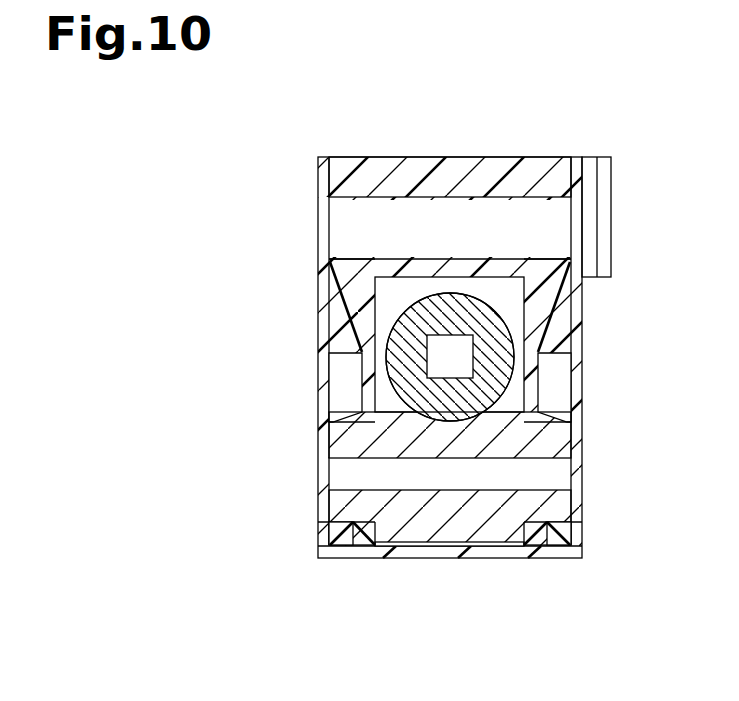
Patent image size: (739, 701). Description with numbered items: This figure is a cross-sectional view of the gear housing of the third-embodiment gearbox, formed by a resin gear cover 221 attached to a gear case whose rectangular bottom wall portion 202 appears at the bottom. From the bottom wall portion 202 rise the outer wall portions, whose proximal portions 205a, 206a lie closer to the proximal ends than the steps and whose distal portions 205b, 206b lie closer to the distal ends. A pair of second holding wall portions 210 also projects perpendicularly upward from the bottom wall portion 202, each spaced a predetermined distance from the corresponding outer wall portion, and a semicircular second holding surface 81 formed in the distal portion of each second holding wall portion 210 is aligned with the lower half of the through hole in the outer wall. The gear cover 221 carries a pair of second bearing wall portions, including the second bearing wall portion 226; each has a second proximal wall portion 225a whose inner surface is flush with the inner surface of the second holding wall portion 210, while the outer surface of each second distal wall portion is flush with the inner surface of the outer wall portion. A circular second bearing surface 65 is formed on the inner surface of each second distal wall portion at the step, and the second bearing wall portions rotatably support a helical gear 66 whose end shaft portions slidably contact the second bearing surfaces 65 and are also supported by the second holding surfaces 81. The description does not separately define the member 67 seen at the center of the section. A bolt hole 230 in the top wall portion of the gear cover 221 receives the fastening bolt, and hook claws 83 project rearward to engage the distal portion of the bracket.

The gear cover 221 is at (370, 153).
The hook claws 83 is at (588, 157).
The bolt hole 230 is at (330, 196).
The shaft 67 is at (455, 277).
The distal portion of outer wall portion 205b is at (329, 272).
The distal portion of outer wall portion 206b is at (583, 297).
The second proximal wall portion 225a is at (362, 368).
The second bearing wall portion 226 is at (538, 395).
The second bearing surface 65 is at (345, 438).
The proximal portion of outer wall portion 205a is at (318, 523).
The proximal portion of outer wall portion 206a is at (583, 523).
The second holding surface 81 is at (341, 545).
The second holding wall portions 210 is at (365, 538).
The bottom wall portion 202 is at (447, 558).
The helical gear 66 is at (486, 546).